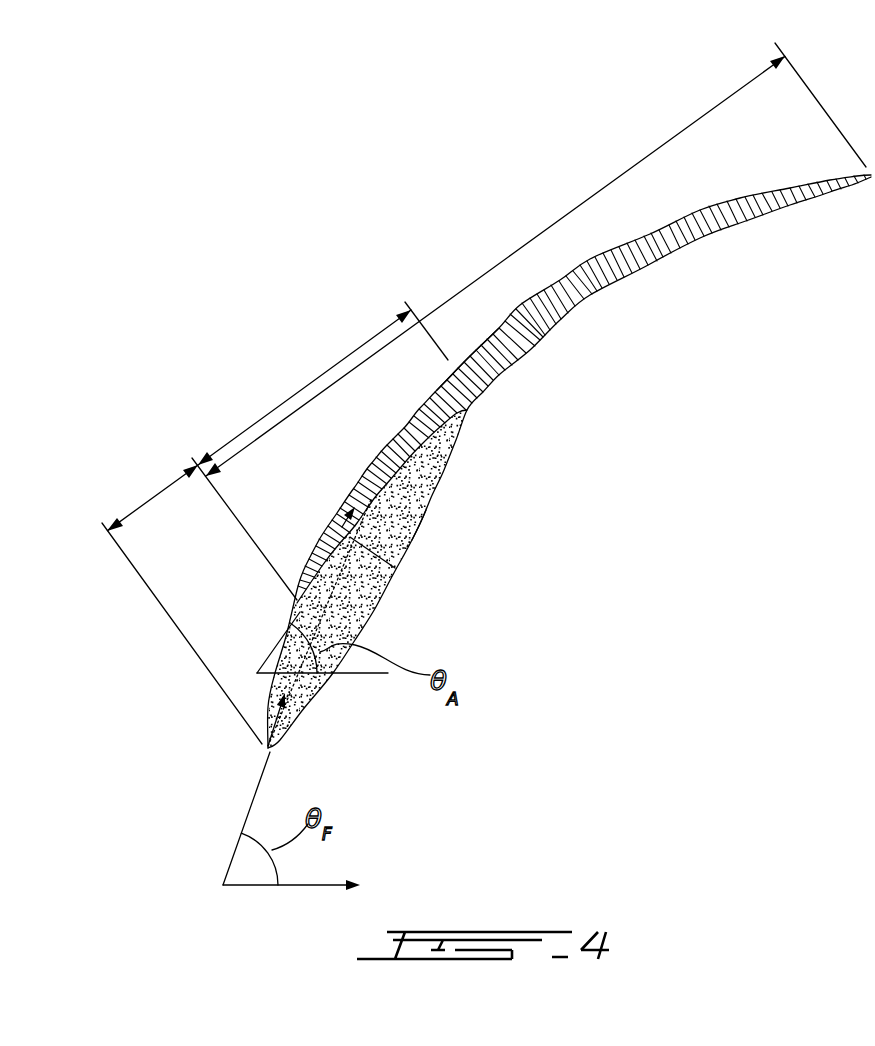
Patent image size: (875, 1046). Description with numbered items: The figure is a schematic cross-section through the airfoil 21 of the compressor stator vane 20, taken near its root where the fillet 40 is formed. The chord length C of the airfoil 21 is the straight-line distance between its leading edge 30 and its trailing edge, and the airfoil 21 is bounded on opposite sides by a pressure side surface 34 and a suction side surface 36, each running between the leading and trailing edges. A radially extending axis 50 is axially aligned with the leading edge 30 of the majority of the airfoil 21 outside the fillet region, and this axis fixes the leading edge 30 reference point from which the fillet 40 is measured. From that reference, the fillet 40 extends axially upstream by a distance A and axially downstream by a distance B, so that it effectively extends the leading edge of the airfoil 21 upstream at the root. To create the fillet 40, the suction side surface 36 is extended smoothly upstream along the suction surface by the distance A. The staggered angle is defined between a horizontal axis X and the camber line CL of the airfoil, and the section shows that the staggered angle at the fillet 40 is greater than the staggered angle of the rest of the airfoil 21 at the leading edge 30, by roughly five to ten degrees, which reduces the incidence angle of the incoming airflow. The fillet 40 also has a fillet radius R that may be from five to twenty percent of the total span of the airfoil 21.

The vane 20 is at (507, 292).
The airfoil 21 is at (508, 280).
The leading edge 30 is at (297, 600).
The pressure side surface 34 is at (513, 365).
The suction side surface 36 is at (462, 353).
The fillet 40 is at (390, 600).
The radially extending axis 50 is at (297, 600).
The distance A is at (155, 498).
The distance B is at (290, 397).
The chord length C is at (642, 158).
The fillet radius R is at (415, 532).
The camber line CL is at (263, 771).
The horizontal axis X is at (301, 887).